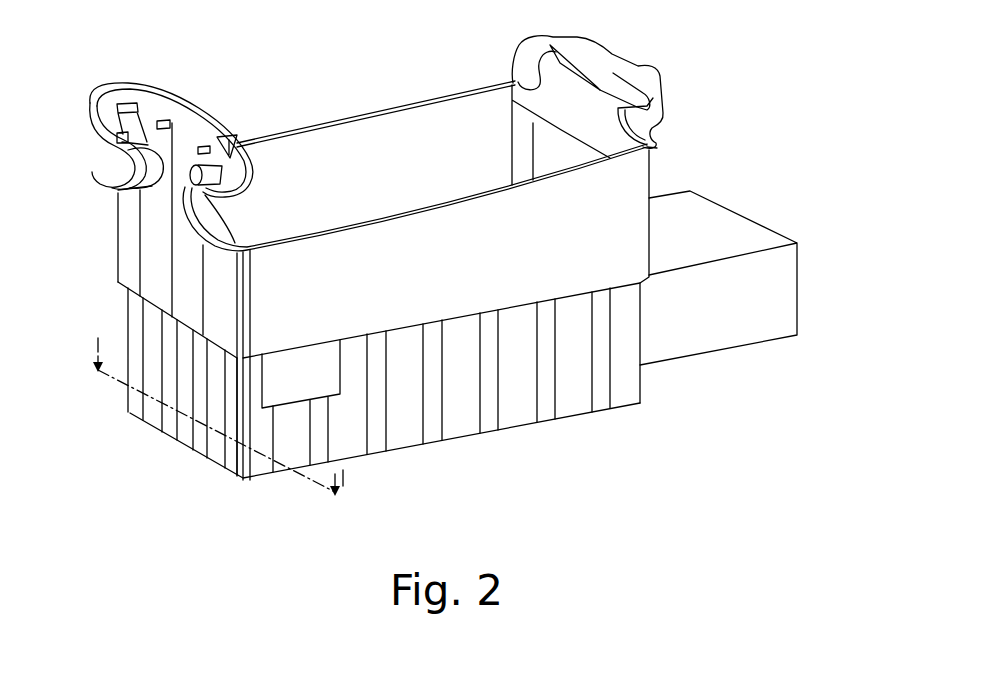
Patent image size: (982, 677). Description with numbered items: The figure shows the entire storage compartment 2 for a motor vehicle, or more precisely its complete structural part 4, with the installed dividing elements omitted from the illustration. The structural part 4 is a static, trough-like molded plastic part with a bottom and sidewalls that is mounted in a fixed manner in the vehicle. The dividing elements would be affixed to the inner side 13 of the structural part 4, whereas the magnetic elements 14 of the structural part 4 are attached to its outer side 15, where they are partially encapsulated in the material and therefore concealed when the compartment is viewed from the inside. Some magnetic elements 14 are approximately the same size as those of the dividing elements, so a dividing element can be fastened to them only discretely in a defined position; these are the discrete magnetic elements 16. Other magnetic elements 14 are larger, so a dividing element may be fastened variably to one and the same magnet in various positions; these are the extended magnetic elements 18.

The storage compartment 2 is at (745, 132).
The structural part 4 is at (708, 325).
The inner side 13 is at (406, 133).
The magnetic elements 14 is at (435, 427).
The outer side 15 is at (573, 400).
The discrete magnetic elements 16 is at (543, 403).
The extended magnetic elements 18 is at (195, 437).